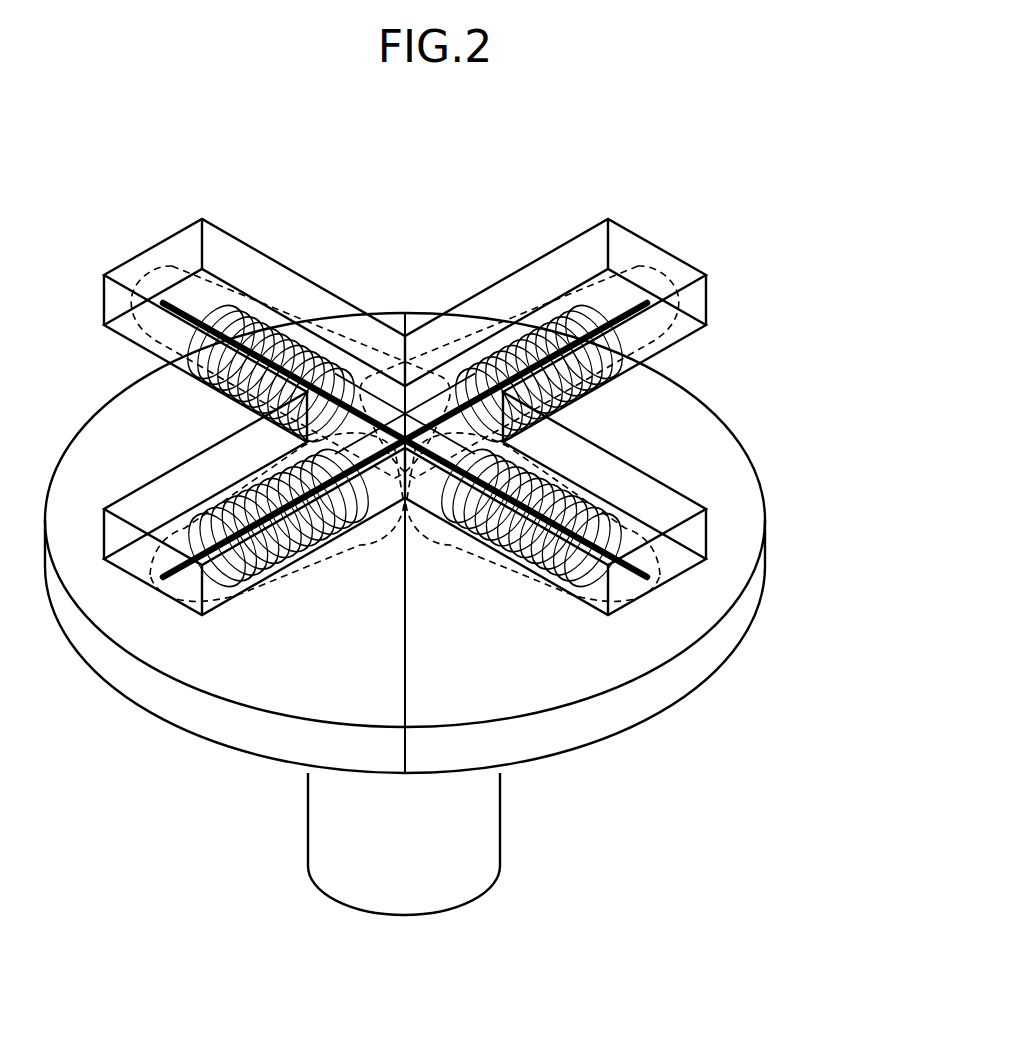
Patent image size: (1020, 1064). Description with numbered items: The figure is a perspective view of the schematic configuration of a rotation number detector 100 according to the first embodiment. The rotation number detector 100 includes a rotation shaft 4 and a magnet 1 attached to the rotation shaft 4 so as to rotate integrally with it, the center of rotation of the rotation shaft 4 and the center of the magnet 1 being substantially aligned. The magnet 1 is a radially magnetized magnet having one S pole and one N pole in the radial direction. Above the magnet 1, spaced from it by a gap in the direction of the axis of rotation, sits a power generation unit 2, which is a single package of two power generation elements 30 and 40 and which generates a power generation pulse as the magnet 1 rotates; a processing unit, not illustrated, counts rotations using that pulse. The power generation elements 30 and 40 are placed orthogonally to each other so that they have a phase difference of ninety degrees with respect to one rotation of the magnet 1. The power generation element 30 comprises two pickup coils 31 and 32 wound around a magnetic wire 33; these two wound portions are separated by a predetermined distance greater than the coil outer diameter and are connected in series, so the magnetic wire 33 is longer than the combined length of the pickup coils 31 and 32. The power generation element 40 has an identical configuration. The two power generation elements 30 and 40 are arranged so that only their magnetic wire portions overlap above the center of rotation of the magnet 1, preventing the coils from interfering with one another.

The magnet 1 is at (605, 726).
The power generation unit 2 is at (573, 237).
The rotation shaft 4 is at (487, 843).
The power generation element 30 is at (288, 305).
The pickup coil 31 is at (313, 350).
The pickup coil 32 is at (565, 471).
The magnetic wire 33 is at (178, 310).
The power generation element 40 is at (528, 302).
The rotation number detector 100 is at (733, 866).